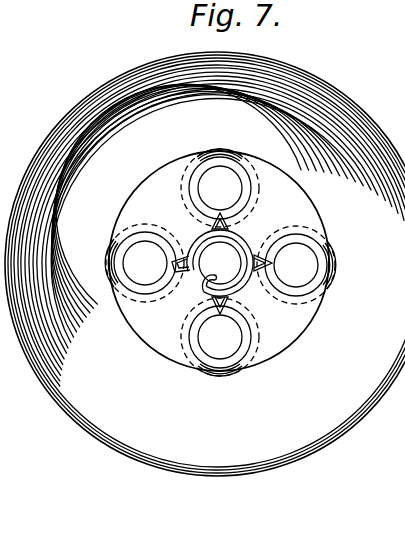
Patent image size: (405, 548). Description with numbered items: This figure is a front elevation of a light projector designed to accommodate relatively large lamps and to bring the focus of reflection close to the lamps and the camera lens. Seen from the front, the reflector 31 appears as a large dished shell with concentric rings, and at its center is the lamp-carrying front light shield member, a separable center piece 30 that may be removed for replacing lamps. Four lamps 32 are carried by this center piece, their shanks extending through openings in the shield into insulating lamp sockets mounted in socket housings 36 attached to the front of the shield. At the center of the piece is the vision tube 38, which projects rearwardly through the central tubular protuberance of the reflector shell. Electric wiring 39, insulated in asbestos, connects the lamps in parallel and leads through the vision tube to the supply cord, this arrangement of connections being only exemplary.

The central plate 30 is at (293, 207).
The reflector 31 is at (105, 397).
The lamps 32 is at (222, 153).
The socket housings 36 is at (304, 272).
The vision tube 38 is at (205, 267).
The electric wiring 39 is at (246, 284).